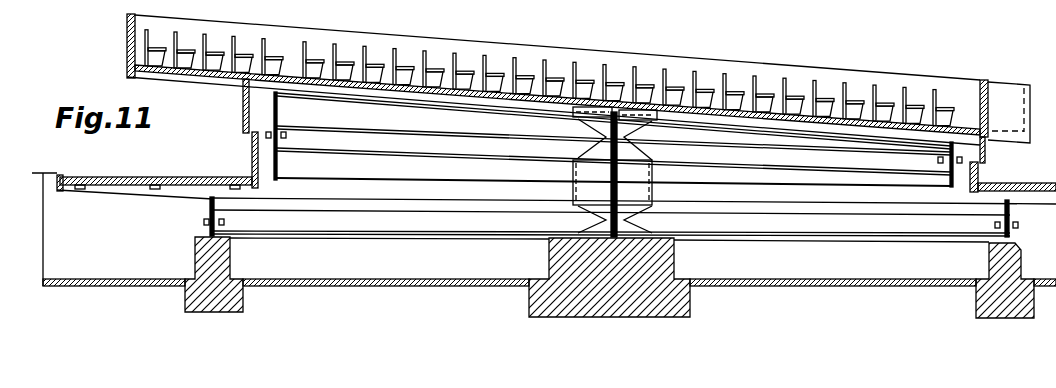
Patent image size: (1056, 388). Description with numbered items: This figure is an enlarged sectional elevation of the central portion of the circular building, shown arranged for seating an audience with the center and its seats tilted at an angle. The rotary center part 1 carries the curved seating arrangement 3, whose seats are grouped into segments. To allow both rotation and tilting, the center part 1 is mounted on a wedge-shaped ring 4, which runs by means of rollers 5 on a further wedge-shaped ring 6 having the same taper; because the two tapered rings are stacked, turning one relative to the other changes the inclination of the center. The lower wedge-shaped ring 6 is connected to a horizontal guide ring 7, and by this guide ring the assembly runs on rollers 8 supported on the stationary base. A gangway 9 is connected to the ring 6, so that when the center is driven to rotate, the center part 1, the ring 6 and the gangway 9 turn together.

The center part 1 is at (205, 72).
The seating arrangement 3 is at (570, 60).
The wedge-shaped ring 4 is at (283, 112).
The rollers 5 is at (267, 139).
The wedge-shaped ring 6 is at (285, 160).
The horizontal guide ring 7 is at (210, 231).
The rollers 8 is at (210, 216).
The gangway 9 is at (182, 176).